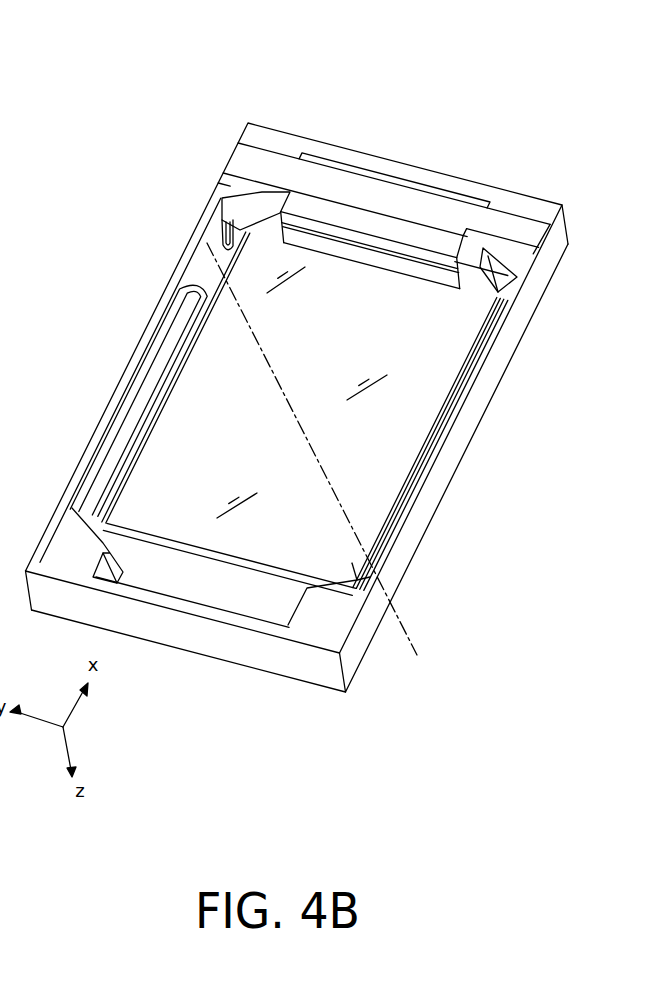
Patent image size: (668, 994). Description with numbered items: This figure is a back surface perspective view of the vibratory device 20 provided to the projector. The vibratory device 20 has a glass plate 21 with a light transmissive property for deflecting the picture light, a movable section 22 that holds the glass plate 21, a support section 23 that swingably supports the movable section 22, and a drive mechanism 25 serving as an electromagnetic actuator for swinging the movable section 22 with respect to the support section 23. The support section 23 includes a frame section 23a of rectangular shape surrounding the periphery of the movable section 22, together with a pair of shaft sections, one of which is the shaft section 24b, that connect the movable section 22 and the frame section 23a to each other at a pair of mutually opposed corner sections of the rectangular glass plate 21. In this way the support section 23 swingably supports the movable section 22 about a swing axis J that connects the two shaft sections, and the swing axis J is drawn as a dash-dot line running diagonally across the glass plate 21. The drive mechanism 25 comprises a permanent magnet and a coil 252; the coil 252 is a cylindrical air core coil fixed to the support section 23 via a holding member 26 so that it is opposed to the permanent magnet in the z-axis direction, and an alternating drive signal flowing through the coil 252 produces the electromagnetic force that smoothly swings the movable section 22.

The vibratory device 20 is at (339, 413).
The glass plate 21 is at (384, 455).
The movable section 22 is at (268, 602).
The support section 23 is at (297, 413).
The frame section 23a is at (275, 136).
The shaft section 24b is at (212, 268).
The drive mechanism 25 is at (370, 174).
The coil 252 is at (374, 260).
The holding member 26 is at (507, 228).
The swing axis J is at (200, 230).